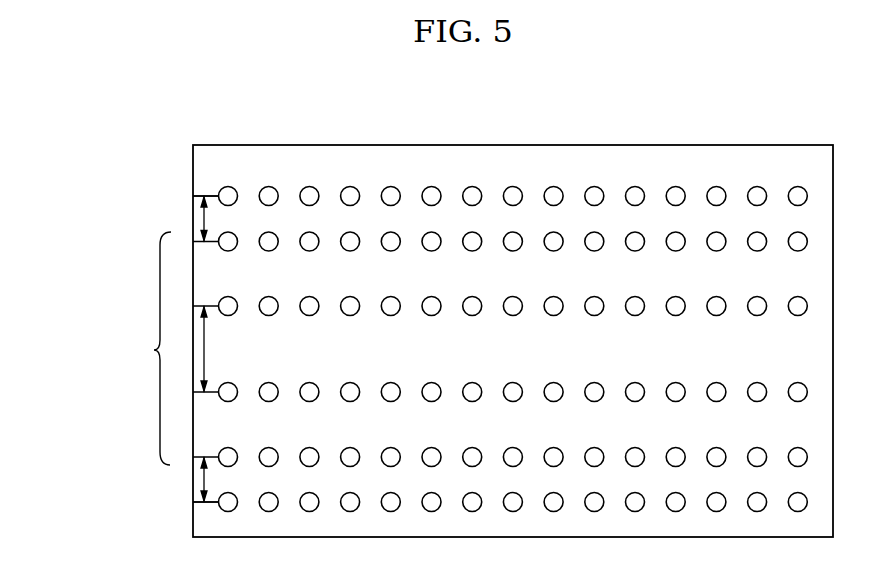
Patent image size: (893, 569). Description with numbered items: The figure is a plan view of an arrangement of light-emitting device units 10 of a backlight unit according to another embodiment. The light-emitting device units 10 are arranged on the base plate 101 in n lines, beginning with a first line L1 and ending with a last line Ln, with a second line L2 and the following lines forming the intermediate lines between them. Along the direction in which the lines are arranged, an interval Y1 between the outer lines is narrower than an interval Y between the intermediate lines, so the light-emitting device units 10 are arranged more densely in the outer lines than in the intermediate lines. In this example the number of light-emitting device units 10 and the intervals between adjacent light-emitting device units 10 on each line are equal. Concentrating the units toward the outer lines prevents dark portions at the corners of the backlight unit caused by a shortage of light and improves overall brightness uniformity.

The base plate 101 is at (357, 168).
The light-emitting device unit 10 is at (634, 187).
The interval between outer lines Y1 is at (219, 349).
The interval between intermediate lines Y is at (213, 349).
The first line L1 is at (187, 196).
The nth line Ln is at (186, 501).
The second line L2 is at (110, 348).